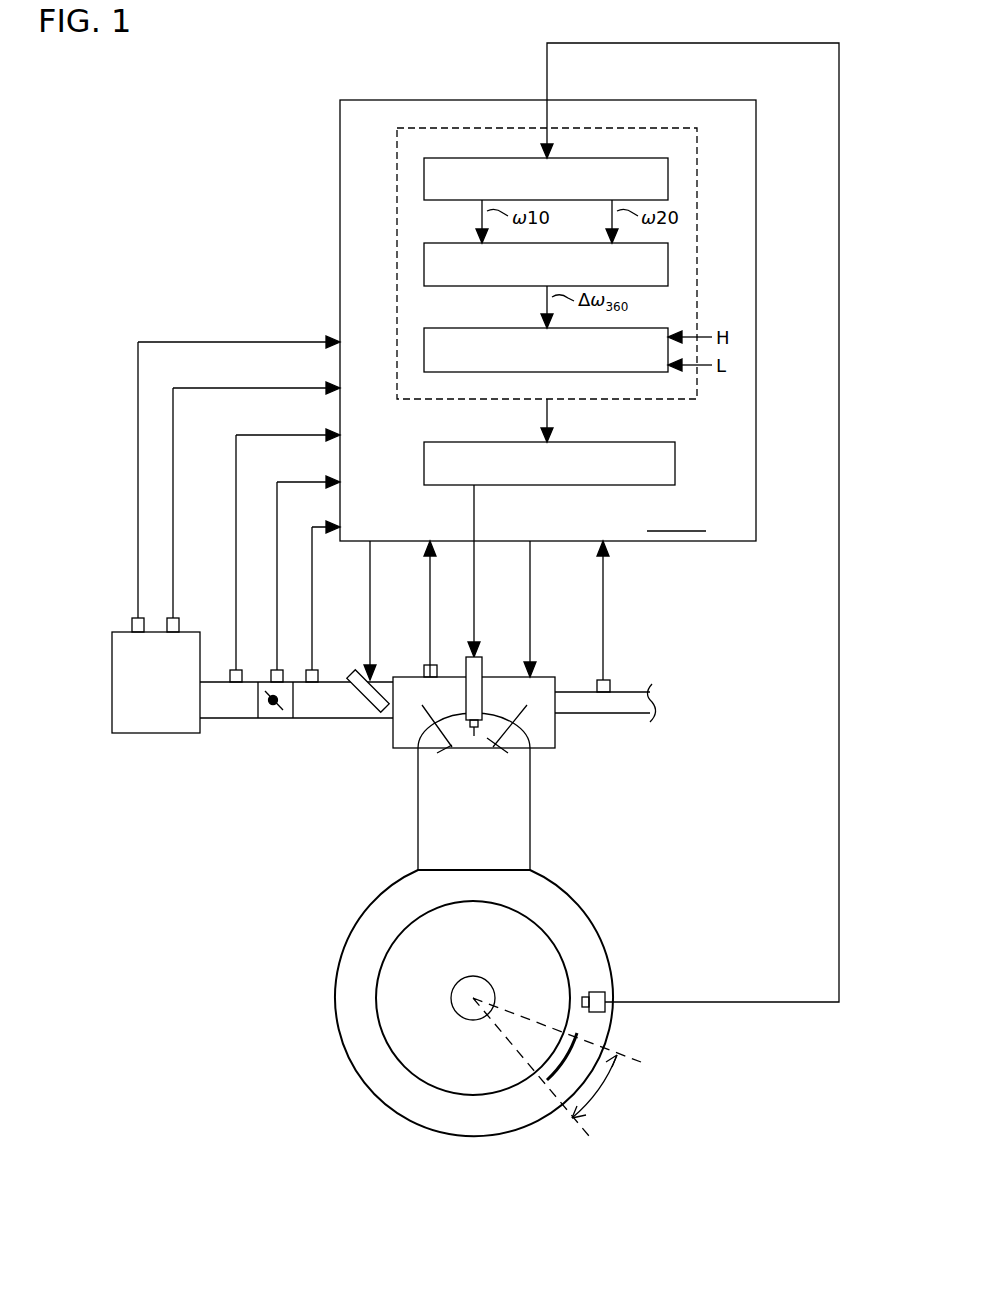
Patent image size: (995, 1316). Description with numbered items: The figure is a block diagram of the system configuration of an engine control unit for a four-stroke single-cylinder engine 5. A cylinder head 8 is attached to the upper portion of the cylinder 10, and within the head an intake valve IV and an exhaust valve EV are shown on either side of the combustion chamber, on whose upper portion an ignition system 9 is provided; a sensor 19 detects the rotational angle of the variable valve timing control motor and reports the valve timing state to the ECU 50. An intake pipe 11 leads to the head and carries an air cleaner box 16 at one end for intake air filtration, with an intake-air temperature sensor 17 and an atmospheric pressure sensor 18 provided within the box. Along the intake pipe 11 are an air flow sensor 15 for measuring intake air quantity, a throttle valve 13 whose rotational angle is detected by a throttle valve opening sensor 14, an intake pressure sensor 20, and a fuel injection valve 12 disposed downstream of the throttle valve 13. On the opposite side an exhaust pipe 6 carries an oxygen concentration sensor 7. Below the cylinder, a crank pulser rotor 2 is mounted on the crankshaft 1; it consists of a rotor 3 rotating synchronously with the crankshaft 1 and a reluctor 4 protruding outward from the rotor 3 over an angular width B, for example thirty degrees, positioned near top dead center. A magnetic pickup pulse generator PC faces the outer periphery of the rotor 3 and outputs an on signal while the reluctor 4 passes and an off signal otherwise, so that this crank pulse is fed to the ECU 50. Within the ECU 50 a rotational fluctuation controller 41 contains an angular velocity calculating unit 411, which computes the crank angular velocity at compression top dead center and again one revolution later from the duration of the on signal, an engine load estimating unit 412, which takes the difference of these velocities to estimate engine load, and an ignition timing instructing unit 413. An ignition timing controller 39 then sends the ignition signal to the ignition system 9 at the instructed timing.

The crankshaft 1 is at (473, 998).
The crank pulser rotor 2 is at (400, 932).
The rotor 3 is at (400, 1020).
The reluctor 4 is at (540, 1078).
The engine 5 is at (572, 866).
The exhaust pipe 6 is at (596, 706).
The oxygen concentration sensor 7 is at (612, 684).
The cylinder head 8 is at (508, 692).
The ignition system 9 is at (466, 665).
The cylinder 10 is at (433, 838).
The intake pipe 11 is at (338, 720).
The fuel injection valve 12 is at (355, 672).
The throttle valve 13 is at (270, 720).
The throttle valve opening sensor 14 is at (272, 668).
The air flow sensor 15 is at (232, 668).
The air cleaner box 16 is at (155, 740).
The intake-air temperature sensor 17 is at (170, 617).
The atmospheric pressure sensor 18 is at (133, 617).
The sensor 19 is at (422, 668).
The intake pressure sensor 20 is at (308, 668).
The ignition timing controller 39 is at (424, 458).
The rotational fluctuation controller 41 is at (697, 148).
The ECU 50 is at (716, 545).
The angular velocity calculating unit 411 is at (424, 178).
The engine load estimating unit 412 is at (424, 262).
The ignition timing instructing unit 413 is at (424, 348).
The intake valve IV is at (410, 722).
The exhaust valve EV is at (530, 722).
The pulse generator PC is at (595, 983).
The width B is at (600, 1090).